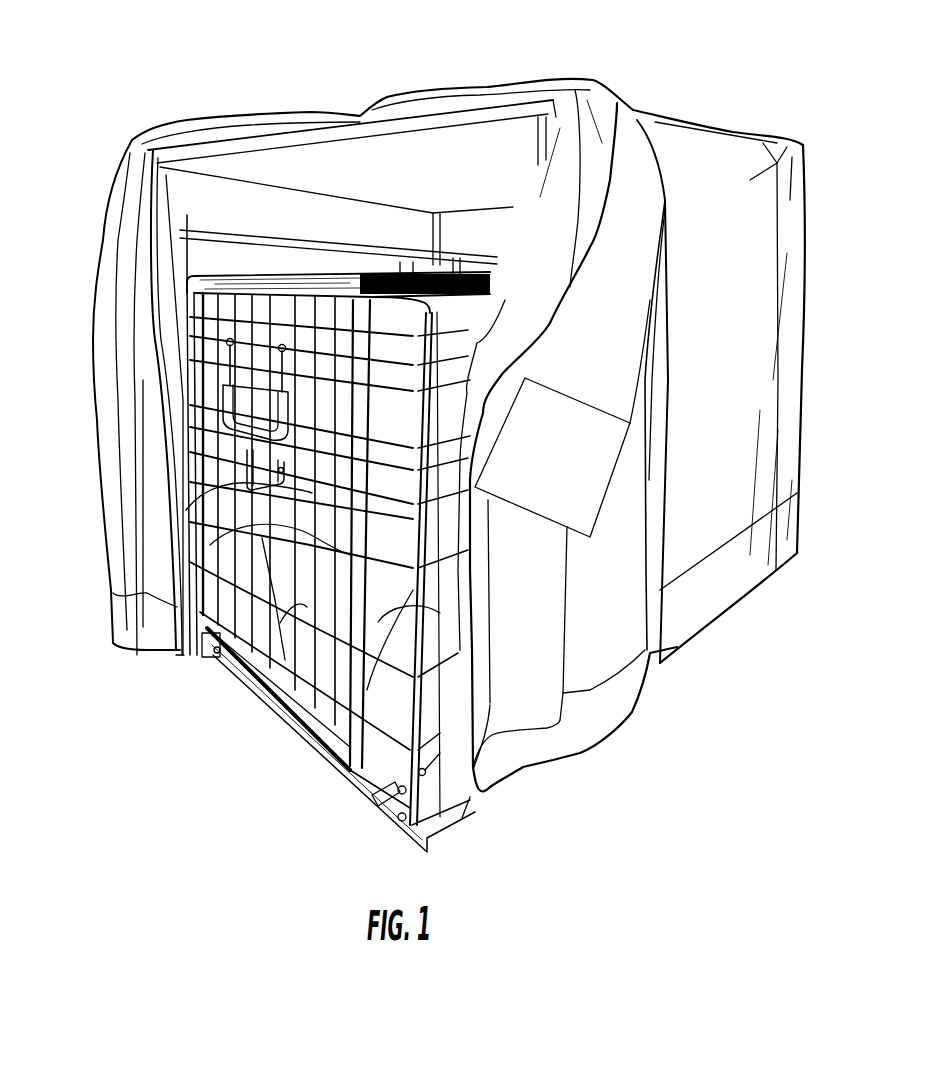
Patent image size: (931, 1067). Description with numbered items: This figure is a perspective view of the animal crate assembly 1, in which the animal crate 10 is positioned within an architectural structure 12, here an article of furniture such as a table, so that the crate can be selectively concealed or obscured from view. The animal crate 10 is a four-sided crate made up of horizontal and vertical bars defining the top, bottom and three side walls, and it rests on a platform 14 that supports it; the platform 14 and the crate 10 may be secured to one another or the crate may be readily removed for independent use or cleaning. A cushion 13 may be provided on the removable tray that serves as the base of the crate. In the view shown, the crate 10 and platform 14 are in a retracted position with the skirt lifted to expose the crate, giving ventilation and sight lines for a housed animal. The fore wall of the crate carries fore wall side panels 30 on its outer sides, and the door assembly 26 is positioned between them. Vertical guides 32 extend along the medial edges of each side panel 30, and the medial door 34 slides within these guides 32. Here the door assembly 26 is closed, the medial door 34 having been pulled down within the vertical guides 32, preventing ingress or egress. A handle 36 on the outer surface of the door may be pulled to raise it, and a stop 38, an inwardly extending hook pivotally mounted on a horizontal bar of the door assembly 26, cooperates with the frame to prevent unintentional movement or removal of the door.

The animal crate assembly 1 is at (111, 105).
The animal crate 10 is at (444, 297).
The architectural structure 12 is at (265, 160).
The cushion 13 is at (285, 665).
The platform 14 is at (430, 827).
The door assembly 26 is at (212, 538).
The fore wall side panels 30 is at (360, 722).
The vertical guides 32 is at (183, 308).
The medial door 34 is at (268, 652).
The handle 36 is at (240, 425).
The stop 38 is at (250, 480).